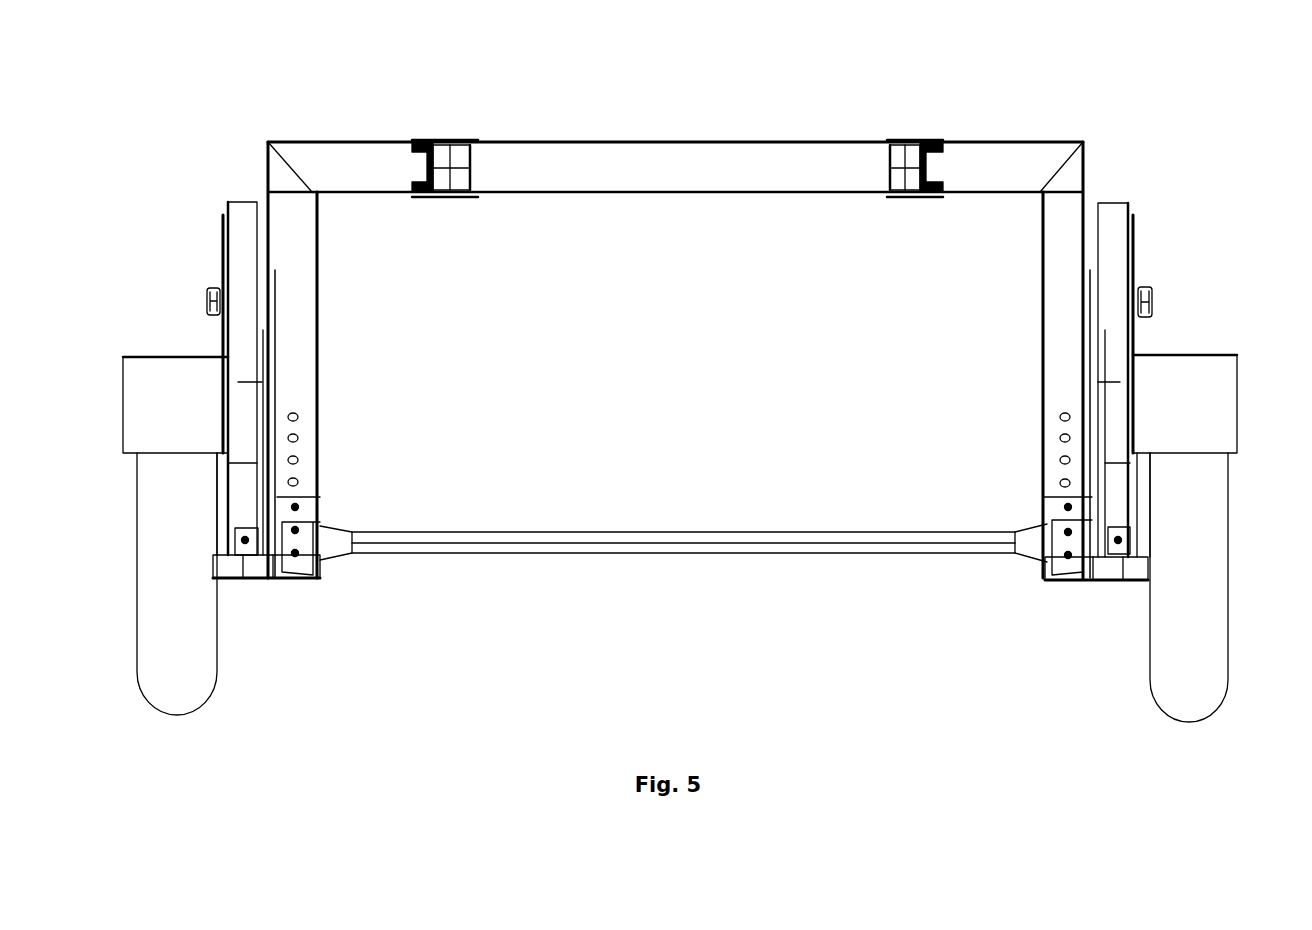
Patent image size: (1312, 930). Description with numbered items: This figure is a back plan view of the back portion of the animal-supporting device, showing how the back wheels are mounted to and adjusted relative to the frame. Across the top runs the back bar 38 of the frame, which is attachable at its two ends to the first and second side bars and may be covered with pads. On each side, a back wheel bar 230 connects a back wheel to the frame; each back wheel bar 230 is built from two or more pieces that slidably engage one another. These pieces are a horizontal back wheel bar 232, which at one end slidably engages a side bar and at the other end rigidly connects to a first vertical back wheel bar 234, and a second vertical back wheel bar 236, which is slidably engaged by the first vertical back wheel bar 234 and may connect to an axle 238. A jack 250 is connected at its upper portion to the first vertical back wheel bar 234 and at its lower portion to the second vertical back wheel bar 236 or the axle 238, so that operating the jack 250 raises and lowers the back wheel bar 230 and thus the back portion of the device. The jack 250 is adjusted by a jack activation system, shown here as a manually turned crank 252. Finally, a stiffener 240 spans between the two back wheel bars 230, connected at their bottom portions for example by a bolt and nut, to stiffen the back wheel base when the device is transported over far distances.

The back bar 38 is at (623, 167).
The back wheel bar 230 is at (237, 107).
The horizontal back wheel bar 232 is at (370, 160).
The first vertical back wheel bar 234 is at (295, 233).
The second vertical back wheel bar 236 is at (310, 580).
The axle 238 is at (258, 568).
The stiffener 240 is at (952, 556).
The jack 250 is at (240, 337).
The crank 252 is at (207, 297).